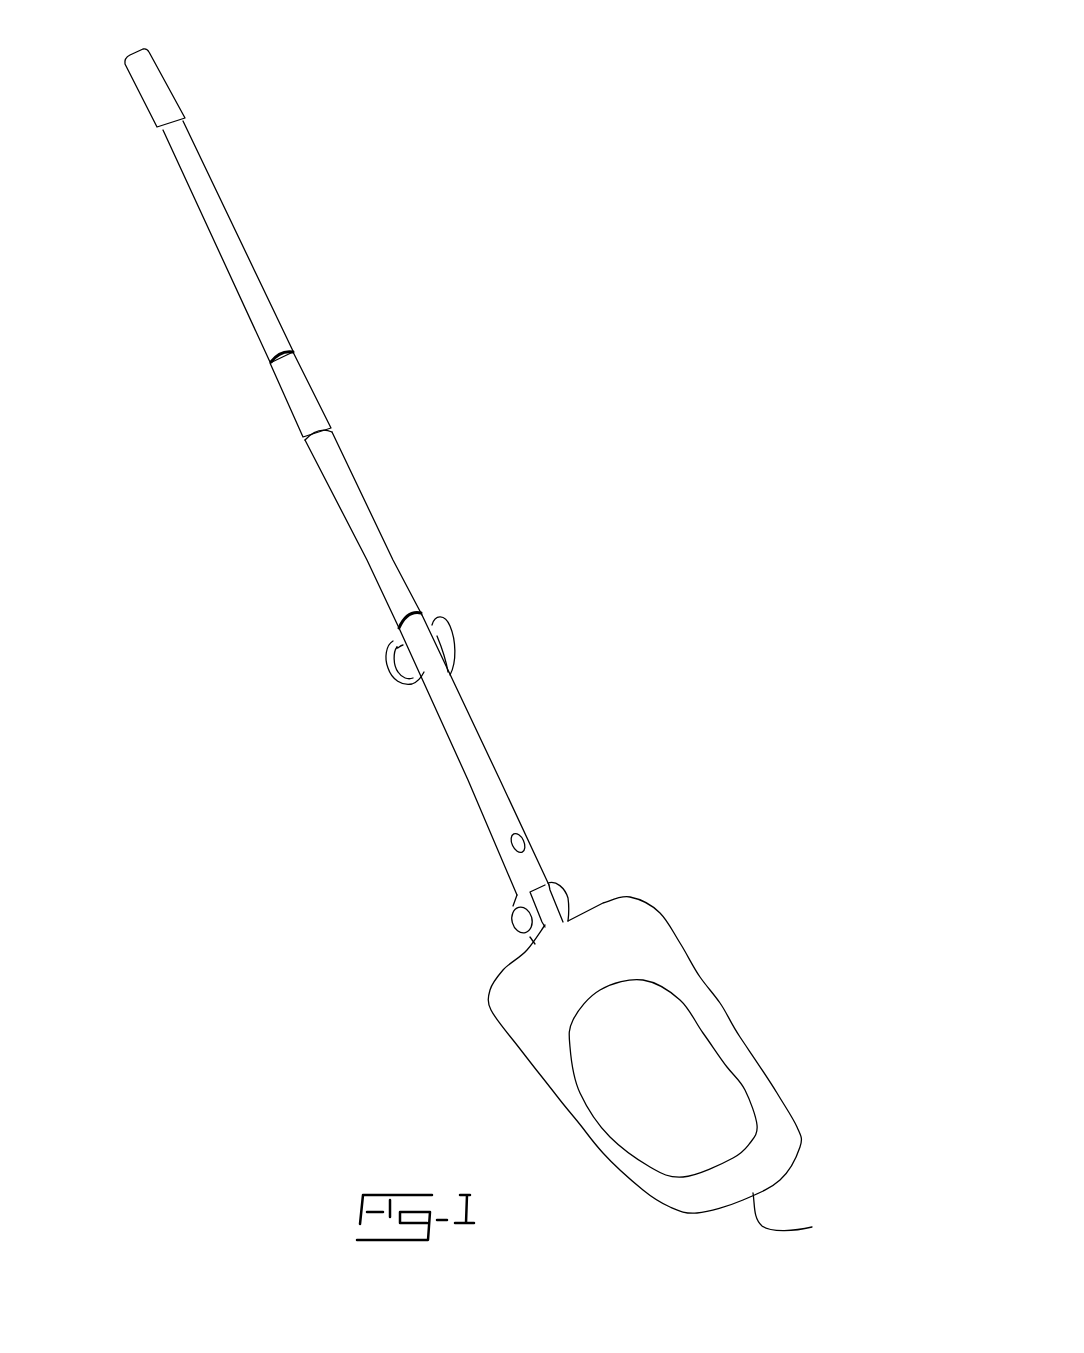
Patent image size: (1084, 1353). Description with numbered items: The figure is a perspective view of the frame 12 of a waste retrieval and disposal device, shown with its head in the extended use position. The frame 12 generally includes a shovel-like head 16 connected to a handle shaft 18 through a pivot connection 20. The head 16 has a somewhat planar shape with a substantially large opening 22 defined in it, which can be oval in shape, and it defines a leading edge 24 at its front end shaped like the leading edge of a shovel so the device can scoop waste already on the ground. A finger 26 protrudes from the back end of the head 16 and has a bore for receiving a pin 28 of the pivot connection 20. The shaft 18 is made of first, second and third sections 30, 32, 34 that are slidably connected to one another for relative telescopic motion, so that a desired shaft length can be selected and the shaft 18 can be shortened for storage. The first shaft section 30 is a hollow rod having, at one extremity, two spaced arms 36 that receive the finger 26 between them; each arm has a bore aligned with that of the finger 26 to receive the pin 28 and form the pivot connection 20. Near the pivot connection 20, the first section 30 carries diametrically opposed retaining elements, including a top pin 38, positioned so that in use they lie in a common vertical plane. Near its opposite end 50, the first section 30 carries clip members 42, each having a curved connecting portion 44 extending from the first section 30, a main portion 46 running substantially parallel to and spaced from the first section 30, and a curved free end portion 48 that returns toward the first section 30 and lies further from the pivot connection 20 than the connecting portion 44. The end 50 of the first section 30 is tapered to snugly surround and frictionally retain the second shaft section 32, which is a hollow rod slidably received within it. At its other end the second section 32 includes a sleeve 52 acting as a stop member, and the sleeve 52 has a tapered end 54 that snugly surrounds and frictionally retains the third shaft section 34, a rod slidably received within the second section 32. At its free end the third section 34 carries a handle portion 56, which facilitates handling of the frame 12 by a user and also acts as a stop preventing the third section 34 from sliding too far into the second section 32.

The frame 12 is at (411, 215).
The head 16 is at (733, 1017).
The handle shaft 18 is at (498, 773).
The pivot connection 20 is at (508, 916).
The opening 22 is at (700, 1073).
The leading edge 24 is at (812, 1227).
The finger 26 is at (546, 906).
The pin 28 is at (520, 925).
The first shaft section 30 is at (457, 723).
The second shaft section 32 is at (369, 542).
The third shaft section 34 is at (227, 253).
The arms 36 is at (565, 897).
The top pin 38 is at (512, 845).
The clip member 42 is at (385, 666).
The connecting portion 44 is at (418, 686).
The main portion 46 is at (394, 682).
The free end portion 48 is at (392, 646).
The end of first section 50 is at (415, 613).
The sleeve 52 is at (307, 398).
The tapered end 54 is at (288, 362).
The handle portion 56 is at (157, 90).